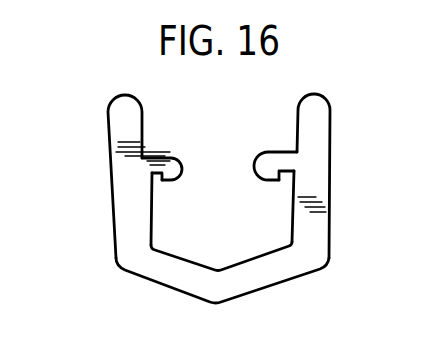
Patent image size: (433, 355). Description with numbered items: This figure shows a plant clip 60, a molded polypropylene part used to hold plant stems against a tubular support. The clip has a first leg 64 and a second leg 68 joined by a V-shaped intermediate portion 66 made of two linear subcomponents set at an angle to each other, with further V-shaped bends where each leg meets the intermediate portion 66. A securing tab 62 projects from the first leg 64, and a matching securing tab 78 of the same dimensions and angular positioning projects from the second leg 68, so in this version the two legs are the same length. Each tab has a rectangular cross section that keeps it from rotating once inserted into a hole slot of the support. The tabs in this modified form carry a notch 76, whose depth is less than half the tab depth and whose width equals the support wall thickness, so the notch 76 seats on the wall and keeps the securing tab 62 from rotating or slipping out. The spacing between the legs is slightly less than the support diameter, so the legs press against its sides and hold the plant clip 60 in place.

The plant clip 60 is at (213, 214).
The securing tab 62 is at (178, 160).
The first leg 64 is at (118, 132).
The intermediate portion 66 is at (258, 282).
The second leg 68 is at (323, 135).
The notch 76 is at (145, 188).
The securing tab 78 is at (270, 162).